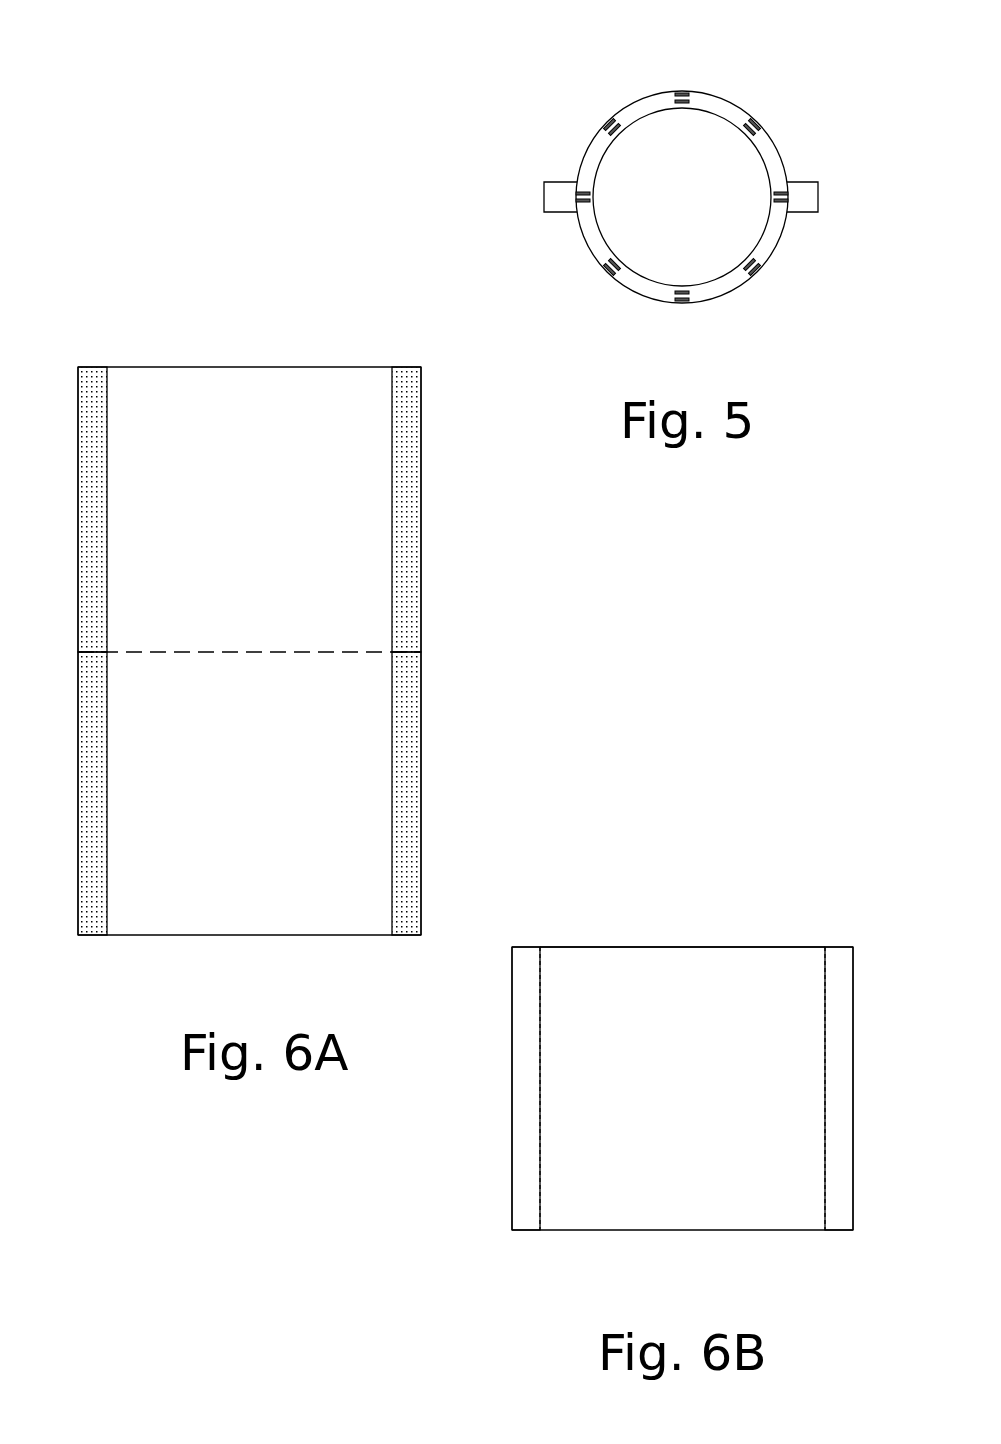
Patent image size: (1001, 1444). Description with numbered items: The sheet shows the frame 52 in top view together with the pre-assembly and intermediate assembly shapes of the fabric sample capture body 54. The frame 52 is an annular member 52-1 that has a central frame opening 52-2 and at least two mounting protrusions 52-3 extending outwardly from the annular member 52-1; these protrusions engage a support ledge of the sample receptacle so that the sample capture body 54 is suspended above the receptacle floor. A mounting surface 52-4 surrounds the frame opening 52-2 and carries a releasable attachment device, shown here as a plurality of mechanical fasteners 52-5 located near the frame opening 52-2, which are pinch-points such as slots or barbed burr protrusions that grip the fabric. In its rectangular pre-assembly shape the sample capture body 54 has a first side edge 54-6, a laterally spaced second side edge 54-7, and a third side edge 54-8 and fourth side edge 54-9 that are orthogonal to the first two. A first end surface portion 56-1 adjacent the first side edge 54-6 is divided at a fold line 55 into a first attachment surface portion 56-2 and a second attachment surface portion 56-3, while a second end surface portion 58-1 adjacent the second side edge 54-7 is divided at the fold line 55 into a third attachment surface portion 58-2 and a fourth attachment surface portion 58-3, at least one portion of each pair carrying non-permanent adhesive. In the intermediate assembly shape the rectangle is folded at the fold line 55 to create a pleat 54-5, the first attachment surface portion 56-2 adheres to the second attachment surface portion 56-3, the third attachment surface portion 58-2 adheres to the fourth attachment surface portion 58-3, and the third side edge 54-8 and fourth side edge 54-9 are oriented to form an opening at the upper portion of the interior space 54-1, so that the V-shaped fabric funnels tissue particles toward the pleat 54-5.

In FIG. 5, the frame 52 is at (662, 181).
In FIG. 5, the annular member 52-1 is at (733, 103).
In FIG. 5, the frame opening 52-2 is at (596, 221).
In FIG. 5, the mounting protrusions 52-3 is at (556, 182).
In FIG. 5, the mounting surface 52-4 is at (635, 158).
In FIG. 5, the mechanical fasteners 52-5 is at (683, 94).
In FIG. 6A, the sample capture body 54 is at (296, 634).
In FIG. 6B, the sample capture body 54 is at (644, 1066).
In FIG. 6B, the interior space 54-1 is at (654, 925).
In FIG. 6B, the fold (pleat) 54-5 is at (697, 1230).
In FIG. 6A, the first side edge 54-6 is at (78, 700).
In FIG. 6B, the first side edge 54-6 is at (512, 1093).
In FIG. 6A, the second side edge 54-7 is at (421, 700).
In FIG. 6B, the second side edge 54-7 is at (853, 1093).
In FIG. 6A, the third side edge 54-8 is at (236, 367).
In FIG. 6A, the fourth side edge 54-9 is at (188, 935).
In FIG. 6B, the fourth side edge 54-9 is at (724, 947).
In FIG. 6A, the fold line 55 is at (328, 652).
In FIG. 6A, the first end surface portion 56-1 is at (88, 594).
In FIG. 6B, the first end surface portion 56-1 is at (535, 925).
In FIG. 6A, the first attachment surface portion 56-2 is at (92, 490).
In FIG. 6A, the second attachment surface portion 56-3 is at (92, 877).
In FIG. 6A, the second end surface portion 58-1 is at (413, 594).
In FIG. 6B, the second end surface portion 58-1 is at (835, 925).
In FIG. 6A, the third attachment surface portion 58-2 is at (408, 490).
In FIG. 6A, the fourth attachment surface portion 58-3 is at (400, 877).